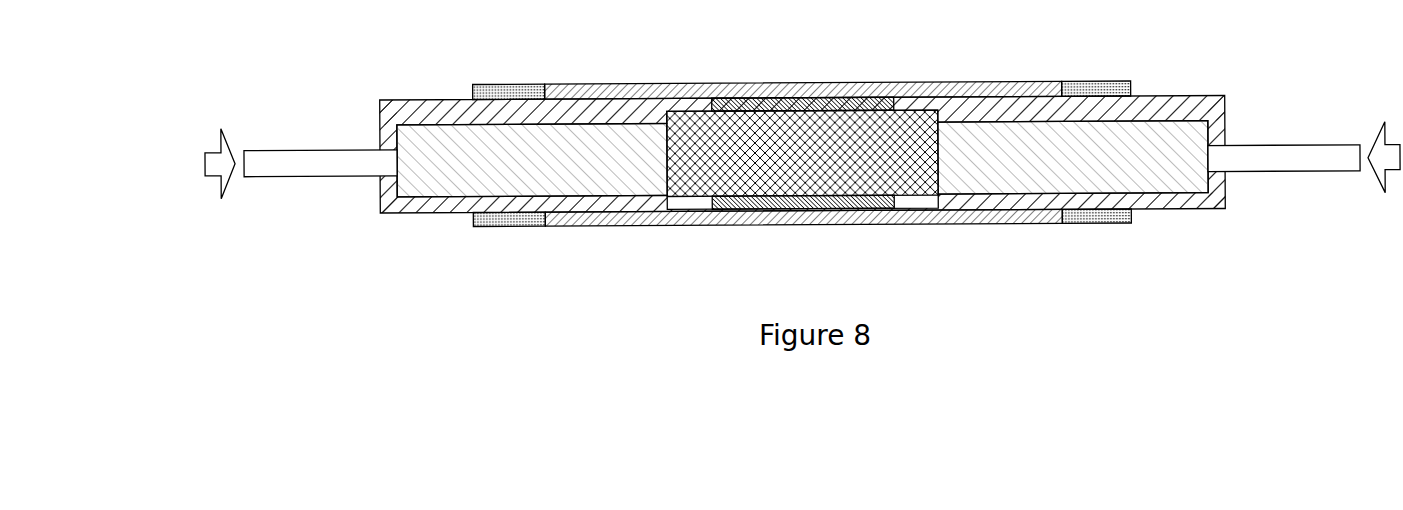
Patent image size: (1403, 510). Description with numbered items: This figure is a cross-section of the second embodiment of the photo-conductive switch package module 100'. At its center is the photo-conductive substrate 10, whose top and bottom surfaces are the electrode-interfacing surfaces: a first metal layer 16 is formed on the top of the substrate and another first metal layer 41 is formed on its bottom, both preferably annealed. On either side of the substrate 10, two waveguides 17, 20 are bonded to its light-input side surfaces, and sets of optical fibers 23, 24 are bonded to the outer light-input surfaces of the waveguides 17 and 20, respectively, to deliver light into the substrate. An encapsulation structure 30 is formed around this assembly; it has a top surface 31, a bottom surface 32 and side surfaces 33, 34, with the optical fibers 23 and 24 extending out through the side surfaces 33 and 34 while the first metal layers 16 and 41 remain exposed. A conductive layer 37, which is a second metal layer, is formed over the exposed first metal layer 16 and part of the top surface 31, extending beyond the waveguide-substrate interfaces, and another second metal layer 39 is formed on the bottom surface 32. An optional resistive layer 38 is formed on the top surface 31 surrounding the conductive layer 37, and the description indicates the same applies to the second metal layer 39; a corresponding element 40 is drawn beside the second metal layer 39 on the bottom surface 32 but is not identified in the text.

The photo-conductive substrate 10 is at (789, 164).
The first metal layer 16 is at (820, 103).
The waveguide 17 is at (1061, 167).
The waveguide 20 is at (522, 171).
The optical fibers 23 is at (1273, 150).
The optical fibers 24 is at (323, 150).
The encapsulation structure 30 is at (802, 153).
The top surface 31 is at (429, 98).
The bottom surface 32 is at (448, 214).
The side surface 33 is at (1225, 187).
The side surface 34 is at (380, 195).
The conductive layer 37 is at (763, 84).
The resistive layer 38 is at (1098, 84).
The second metal layer 39 is at (763, 228).
The lower end piece 40 is at (1104, 227).
The first metal layer 41 is at (822, 207).
The photo-conductive switch package module 100' is at (801, 119).